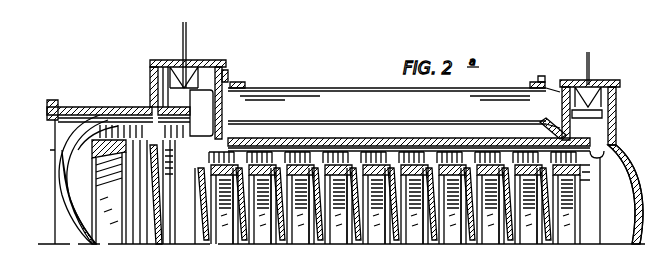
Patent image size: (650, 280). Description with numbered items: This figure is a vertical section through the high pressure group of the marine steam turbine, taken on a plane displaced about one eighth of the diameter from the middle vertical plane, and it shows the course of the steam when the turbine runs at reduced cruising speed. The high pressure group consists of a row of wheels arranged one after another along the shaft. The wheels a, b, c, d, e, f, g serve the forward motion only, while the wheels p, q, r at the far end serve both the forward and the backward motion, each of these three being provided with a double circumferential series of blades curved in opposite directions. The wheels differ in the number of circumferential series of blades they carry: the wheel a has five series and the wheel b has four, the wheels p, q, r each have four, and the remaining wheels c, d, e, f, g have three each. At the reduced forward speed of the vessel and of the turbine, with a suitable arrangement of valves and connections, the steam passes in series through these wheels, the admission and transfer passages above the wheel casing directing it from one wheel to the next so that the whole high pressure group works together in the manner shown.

The wheel a is at (111, 164).
The wheel b is at (194, 133).
The wheel c is at (254, 183).
The wheel d is at (292, 183).
The wheel e is at (330, 183).
The wheel f is at (368, 183).
The wheel g is at (406, 183).
The wheel p is at (463, 183).
The wheel q is at (539, 183).
The wheel r is at (601, 148).